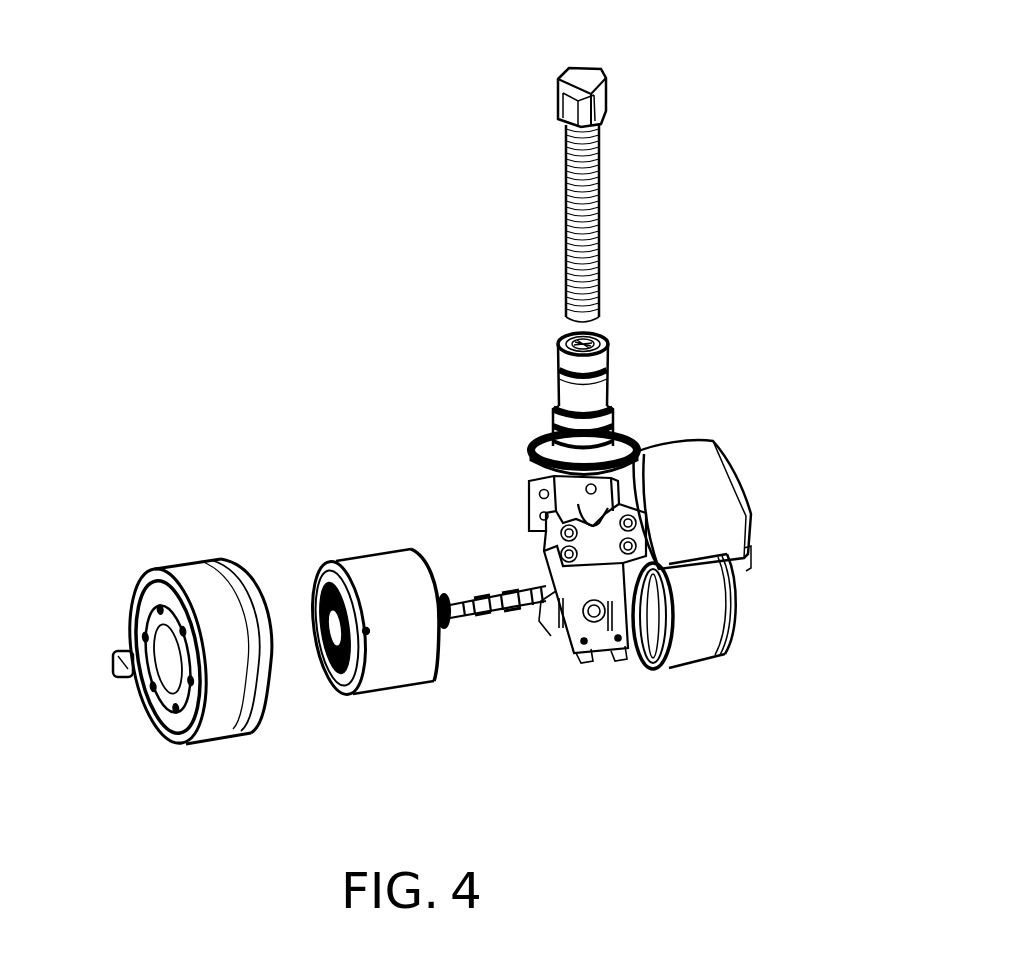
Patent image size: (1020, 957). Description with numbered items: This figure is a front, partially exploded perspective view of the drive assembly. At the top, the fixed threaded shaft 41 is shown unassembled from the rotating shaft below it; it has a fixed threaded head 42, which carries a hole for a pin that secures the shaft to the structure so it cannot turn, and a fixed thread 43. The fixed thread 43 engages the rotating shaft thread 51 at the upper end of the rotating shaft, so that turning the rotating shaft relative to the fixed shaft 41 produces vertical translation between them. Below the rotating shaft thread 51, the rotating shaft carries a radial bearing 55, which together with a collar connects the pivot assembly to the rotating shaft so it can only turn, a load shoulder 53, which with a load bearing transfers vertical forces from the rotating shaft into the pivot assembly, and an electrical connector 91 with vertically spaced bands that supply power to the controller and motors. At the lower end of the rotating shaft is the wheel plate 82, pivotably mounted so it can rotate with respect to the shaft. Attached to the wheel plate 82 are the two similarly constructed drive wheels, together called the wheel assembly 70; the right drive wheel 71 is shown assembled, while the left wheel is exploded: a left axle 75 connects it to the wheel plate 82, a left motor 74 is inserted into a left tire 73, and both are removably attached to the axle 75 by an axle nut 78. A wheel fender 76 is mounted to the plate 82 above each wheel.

The fixed threaded shaft 41 is at (576, 185).
The fixed threaded head 42 is at (634, 88).
The fixed thread 43 is at (630, 223).
The rotating shaft thread 51 is at (638, 322).
The load shoulder 53 is at (535, 410).
The radial bearing 55 is at (650, 363).
The wheel assembly 70 is at (231, 359).
The right drive wheel 71 is at (695, 664).
The left tire 73 is at (195, 593).
The left motor 74 is at (485, 609).
The left axle 75 is at (492, 670).
The wheel fender 76 is at (732, 501).
The axle nut 78 is at (110, 569).
The wheel plate 82 is at (540, 529).
The electrical connector 91 is at (642, 403).